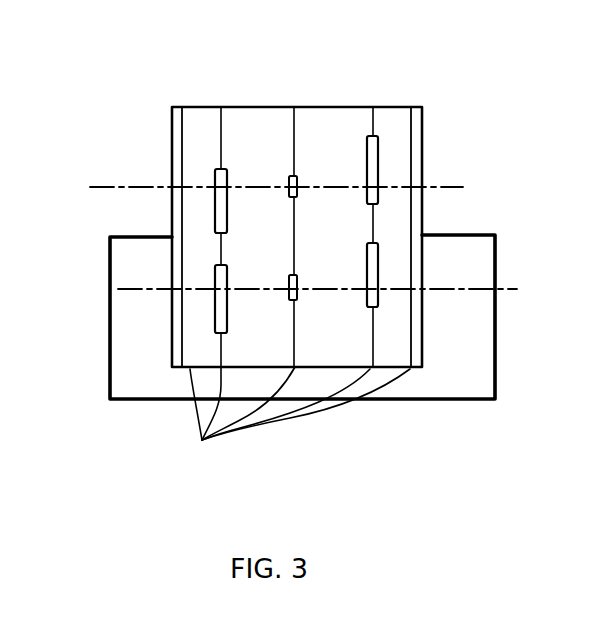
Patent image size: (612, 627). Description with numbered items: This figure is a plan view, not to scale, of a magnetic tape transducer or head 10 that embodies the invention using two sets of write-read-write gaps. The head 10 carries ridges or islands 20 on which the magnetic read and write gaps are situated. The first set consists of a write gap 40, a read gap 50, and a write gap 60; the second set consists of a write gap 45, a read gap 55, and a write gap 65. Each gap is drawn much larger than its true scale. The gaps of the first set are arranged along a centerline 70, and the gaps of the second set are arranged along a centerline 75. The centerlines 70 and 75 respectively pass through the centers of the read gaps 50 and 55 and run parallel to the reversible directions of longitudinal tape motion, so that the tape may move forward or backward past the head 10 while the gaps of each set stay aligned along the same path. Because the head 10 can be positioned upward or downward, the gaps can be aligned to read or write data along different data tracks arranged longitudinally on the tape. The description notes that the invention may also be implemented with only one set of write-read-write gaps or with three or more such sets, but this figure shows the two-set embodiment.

The head 10 is at (252, 128).
The islands 20 is at (202, 440).
The write gap 40 is at (216, 203).
The write gap 45 is at (217, 315).
The read gap 50 is at (297, 178).
The read gap 55 is at (291, 298).
The write gap 60 is at (372, 178).
The write gap 65 is at (380, 298).
The centerline 70 is at (292, 187).
The centerline 75 is at (334, 289).